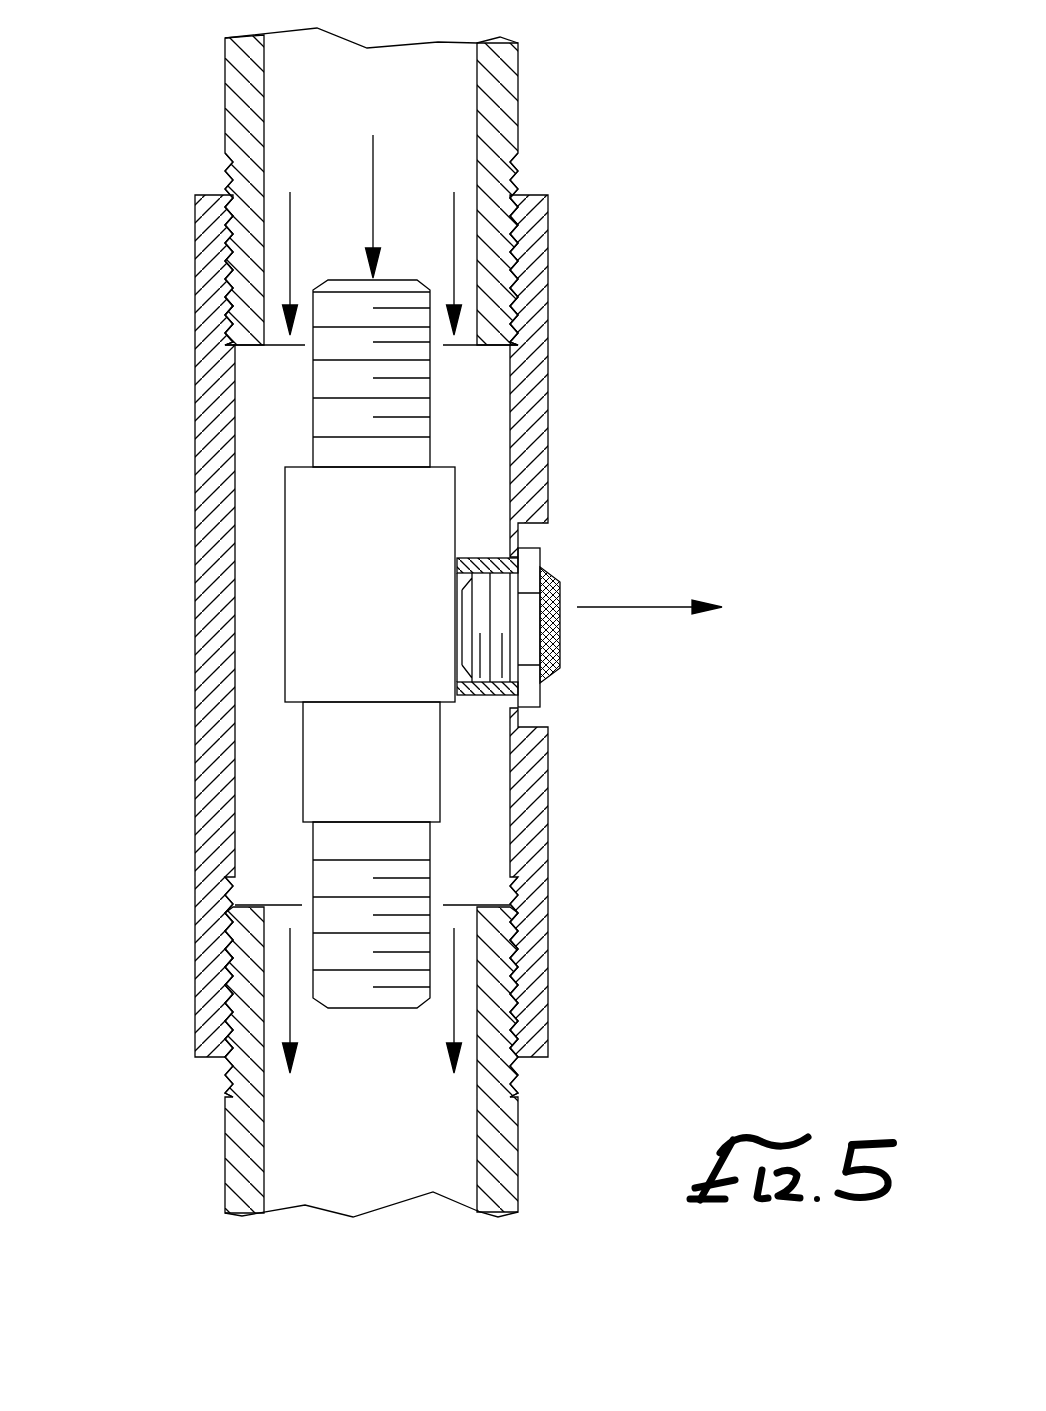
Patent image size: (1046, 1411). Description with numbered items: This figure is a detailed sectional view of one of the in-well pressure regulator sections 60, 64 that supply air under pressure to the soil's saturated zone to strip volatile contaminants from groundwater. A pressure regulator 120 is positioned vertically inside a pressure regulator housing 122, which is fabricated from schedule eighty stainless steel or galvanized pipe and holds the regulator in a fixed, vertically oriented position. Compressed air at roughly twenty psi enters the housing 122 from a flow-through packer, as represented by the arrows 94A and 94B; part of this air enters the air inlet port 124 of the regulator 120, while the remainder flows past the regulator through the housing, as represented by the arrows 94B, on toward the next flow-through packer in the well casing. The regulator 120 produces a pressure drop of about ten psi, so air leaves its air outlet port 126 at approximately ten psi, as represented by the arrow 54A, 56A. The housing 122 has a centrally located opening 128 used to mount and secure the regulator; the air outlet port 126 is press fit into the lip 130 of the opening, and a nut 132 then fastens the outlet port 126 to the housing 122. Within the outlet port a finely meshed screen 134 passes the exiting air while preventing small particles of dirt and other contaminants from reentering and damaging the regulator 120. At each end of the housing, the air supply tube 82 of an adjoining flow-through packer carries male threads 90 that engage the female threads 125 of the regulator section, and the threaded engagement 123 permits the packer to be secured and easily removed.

The in-well pressure regulator section 60 is at (398, 622).
The in-well pressure regulator section 64 is at (163, 363).
The air supply tube 82 is at (518, 96).
The male threads 90 is at (518, 180).
The arrow representing air pressure entering housing 94A is at (373, 157).
The arrows representing air flowing through housing 94B is at (290, 262).
The pressure regulator 120 is at (384, 593).
The pressure regulator housing 122 is at (195, 540).
The upper threaded engagement 123 is at (230, 310).
The air inlet port 124 is at (397, 280).
The female threads 125 is at (230, 950).
The air outlet port 126 is at (567, 629).
The centrally located opening 128 is at (517, 548).
The lip 130 is at (510, 700).
The nut 132 is at (535, 700).
The finely meshed screen 134 is at (560, 665).
The arrow representing regulated air outflow 54A is at (663, 641).
The arrow representing regulated air outflow 56A is at (631, 607).